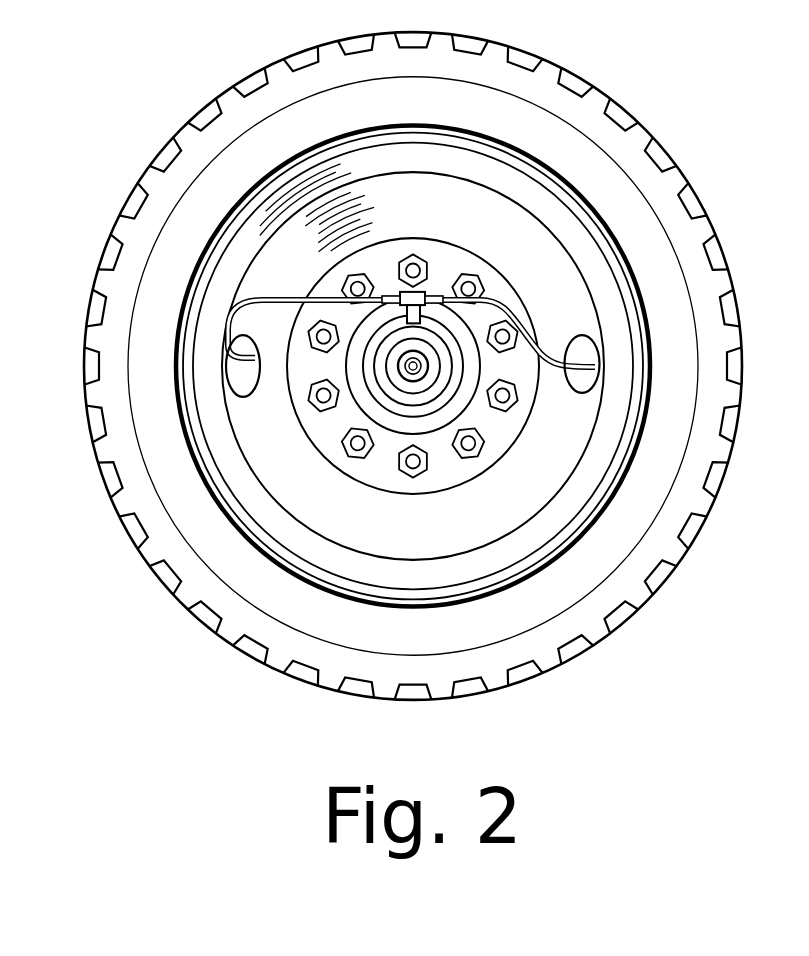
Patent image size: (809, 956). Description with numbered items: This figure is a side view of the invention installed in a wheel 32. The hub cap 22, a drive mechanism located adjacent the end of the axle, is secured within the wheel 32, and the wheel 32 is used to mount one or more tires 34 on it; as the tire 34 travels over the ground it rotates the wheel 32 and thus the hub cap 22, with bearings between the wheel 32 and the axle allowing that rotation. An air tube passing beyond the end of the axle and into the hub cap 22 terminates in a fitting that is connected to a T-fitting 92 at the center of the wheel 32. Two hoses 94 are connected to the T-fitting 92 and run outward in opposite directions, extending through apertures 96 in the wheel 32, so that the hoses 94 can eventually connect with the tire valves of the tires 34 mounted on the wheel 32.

The hub cap 22 is at (432, 408).
The wheel 32 is at (472, 365).
The tire 34 is at (140, 293).
The T-fitting 92 is at (432, 260).
The hoses 94 is at (411, 311).
The apertures 96 is at (413, 393).